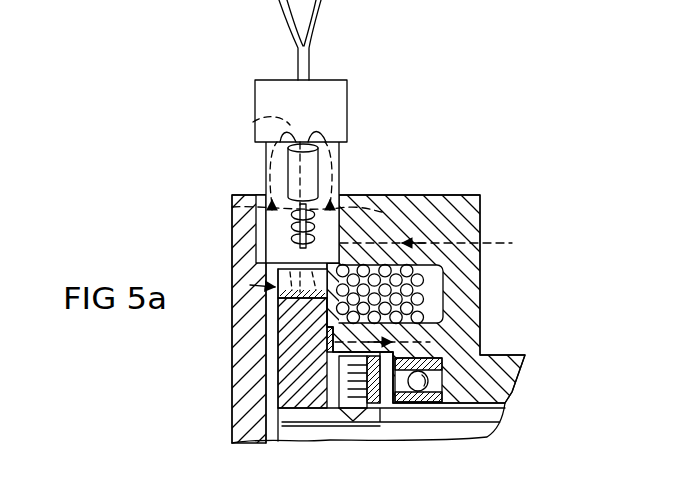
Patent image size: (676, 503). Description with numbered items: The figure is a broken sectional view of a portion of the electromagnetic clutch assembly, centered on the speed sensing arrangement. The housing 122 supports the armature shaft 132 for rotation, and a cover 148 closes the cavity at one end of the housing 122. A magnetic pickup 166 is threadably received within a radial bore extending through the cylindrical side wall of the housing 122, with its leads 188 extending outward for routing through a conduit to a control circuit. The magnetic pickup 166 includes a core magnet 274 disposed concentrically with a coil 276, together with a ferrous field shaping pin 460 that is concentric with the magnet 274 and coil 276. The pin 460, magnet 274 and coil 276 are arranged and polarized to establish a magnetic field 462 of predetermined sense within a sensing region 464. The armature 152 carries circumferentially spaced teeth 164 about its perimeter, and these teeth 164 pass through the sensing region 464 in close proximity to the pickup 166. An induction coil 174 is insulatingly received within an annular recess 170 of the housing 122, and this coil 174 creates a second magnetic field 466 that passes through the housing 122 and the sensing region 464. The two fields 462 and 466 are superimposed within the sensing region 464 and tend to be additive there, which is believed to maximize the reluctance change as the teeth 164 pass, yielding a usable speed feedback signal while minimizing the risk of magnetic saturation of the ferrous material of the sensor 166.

The housing 122 is at (470, 218).
The armature shaft 132 is at (474, 428).
The cover 148 is at (250, 418).
The armature 152 is at (289, 358).
The teeth 164 is at (302, 284).
The magnetic pickup 166 is at (340, 98).
The annular recess 170 is at (440, 326).
The induction coil 174 is at (420, 300).
The leads 188 is at (298, 46).
The core magnet 274 is at (318, 170).
The coil 276 is at (339, 198).
The ferrous field shaping pin 460 is at (256, 208).
The magnetic field 462 is at (262, 119).
The sensing region 464 is at (250, 285).
The magnetic field 466 is at (392, 274).